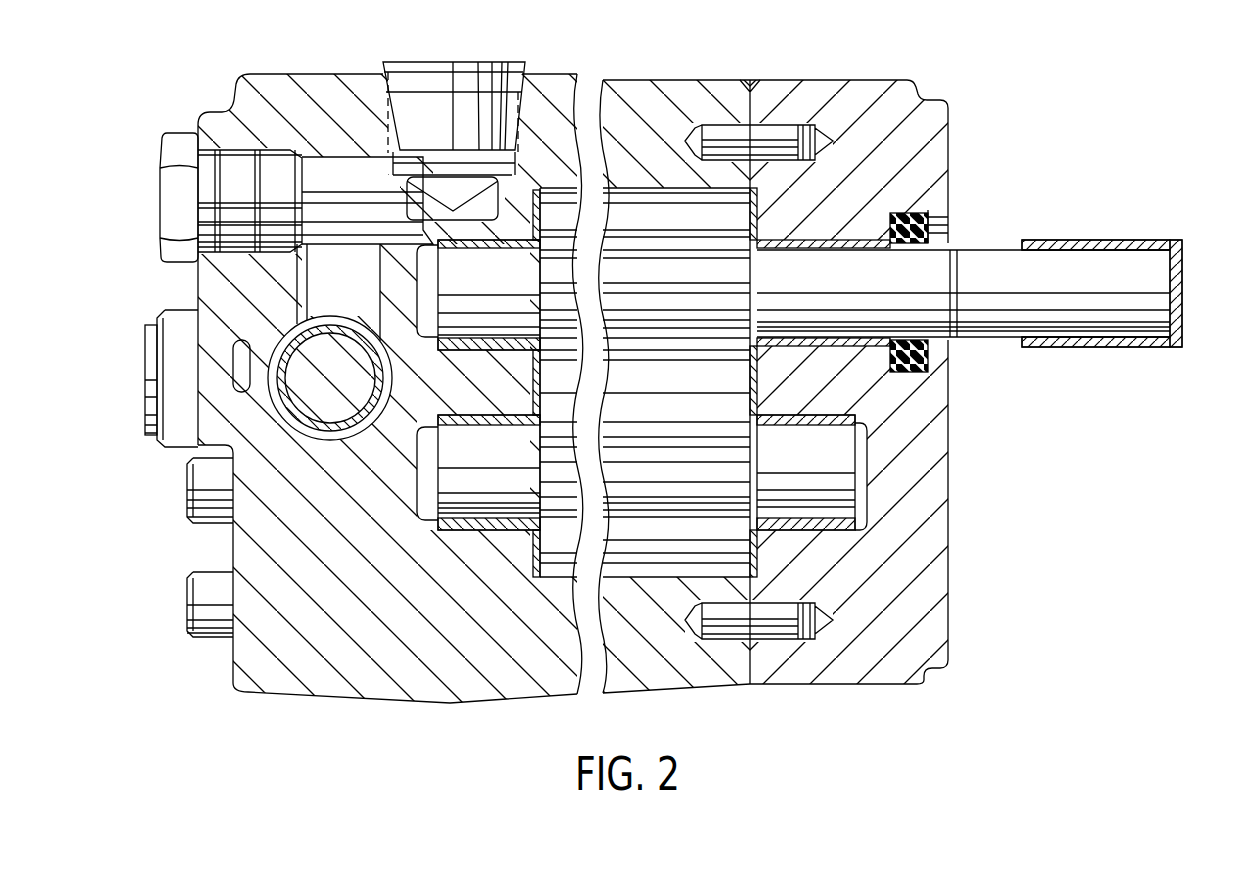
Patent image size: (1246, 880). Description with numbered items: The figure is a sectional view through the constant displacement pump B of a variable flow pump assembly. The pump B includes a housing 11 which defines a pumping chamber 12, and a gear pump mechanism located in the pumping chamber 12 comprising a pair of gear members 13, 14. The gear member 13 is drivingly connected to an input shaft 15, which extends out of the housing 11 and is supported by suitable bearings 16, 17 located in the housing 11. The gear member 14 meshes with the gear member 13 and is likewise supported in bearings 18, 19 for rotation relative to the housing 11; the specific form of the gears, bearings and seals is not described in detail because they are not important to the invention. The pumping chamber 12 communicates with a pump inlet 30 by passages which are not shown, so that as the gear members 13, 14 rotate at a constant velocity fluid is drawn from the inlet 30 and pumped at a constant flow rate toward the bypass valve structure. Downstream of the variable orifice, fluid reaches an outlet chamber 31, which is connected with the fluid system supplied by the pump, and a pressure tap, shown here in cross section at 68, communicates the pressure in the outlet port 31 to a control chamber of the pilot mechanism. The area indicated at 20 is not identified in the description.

The housing 11 is at (757, 84).
The pumping chamber 12 is at (643, 202).
The gear member 13 is at (735, 255).
The gear member 14 is at (725, 538).
The input shaft 15 is at (990, 258).
The bearing 16 is at (800, 343).
The bearing 17 is at (452, 347).
The bearing 18 is at (856, 527).
The bearing 19 is at (465, 522).
The pump body 20 is at (165, 291).
The pump inlet 30 is at (517, 63).
The outlet chamber 31 is at (143, 403).
The pressure tap 68 is at (236, 388).
The constant displacement pump B is at (972, 112).